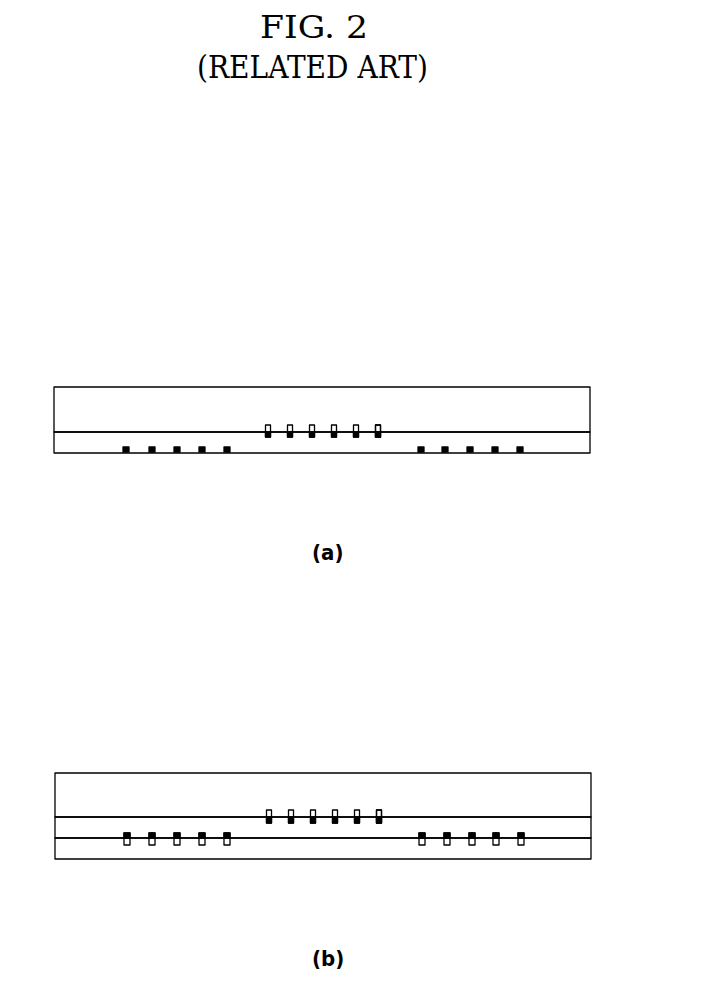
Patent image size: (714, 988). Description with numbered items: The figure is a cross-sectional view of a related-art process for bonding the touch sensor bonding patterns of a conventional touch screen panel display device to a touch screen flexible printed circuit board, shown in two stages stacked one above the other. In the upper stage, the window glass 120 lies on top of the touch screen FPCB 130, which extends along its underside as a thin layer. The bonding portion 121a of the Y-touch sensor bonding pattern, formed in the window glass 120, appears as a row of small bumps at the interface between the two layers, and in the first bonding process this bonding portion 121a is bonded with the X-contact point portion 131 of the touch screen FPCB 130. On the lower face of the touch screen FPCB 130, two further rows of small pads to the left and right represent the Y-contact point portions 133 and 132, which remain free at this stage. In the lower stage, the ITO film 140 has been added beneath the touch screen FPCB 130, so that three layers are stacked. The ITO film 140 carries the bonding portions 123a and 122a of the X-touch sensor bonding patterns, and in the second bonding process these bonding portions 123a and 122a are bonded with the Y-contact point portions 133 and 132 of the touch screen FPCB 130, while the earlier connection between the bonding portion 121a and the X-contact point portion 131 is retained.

The window glass 120 is at (590, 408).
The touch screen FPCB 130 is at (590, 440).
The ITO film 140 is at (591, 847).
The bonding portion 121a is at (379, 425).
The X-contact point portion 131 is at (381, 437).
The Y-contact point portion 133 is at (126, 453).
The Y-contact point portion 132 is at (520, 453).
The bonding portion 123a is at (127, 845).
The bonding portion 122a is at (521, 845).